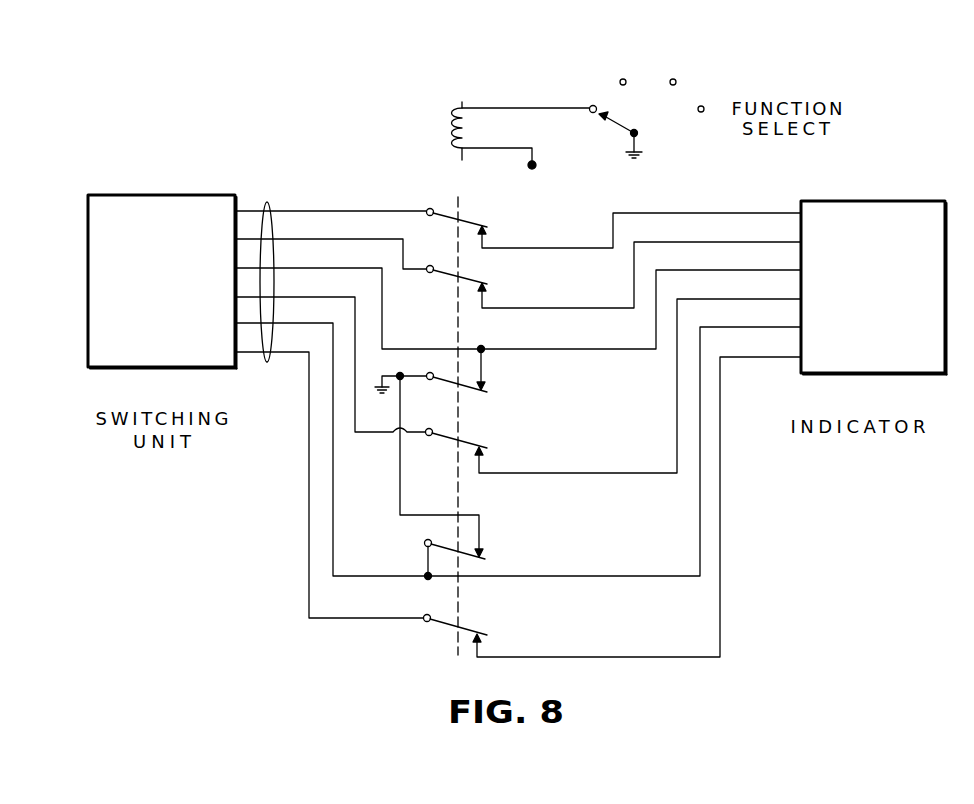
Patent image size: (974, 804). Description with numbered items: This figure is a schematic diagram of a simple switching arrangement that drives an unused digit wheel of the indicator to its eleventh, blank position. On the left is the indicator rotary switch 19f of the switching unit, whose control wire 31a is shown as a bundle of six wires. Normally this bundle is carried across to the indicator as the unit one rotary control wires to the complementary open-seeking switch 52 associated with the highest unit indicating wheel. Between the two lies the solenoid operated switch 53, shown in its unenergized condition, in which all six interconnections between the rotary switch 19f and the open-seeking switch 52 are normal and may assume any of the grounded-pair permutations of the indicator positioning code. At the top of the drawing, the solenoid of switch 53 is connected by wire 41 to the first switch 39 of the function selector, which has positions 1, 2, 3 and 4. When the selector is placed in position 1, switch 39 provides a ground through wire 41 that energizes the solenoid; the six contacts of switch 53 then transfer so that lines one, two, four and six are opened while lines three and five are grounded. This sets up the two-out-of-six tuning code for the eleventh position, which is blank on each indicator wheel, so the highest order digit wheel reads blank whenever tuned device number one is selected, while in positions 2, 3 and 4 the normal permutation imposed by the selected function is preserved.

The indicator rotary switch 19f is at (148, 195).
The control wire 31a is at (274, 201).
The open-seeking switch 52 is at (873, 201).
The solenoid operated switch 53 is at (462, 165).
The wire 41 is at (507, 108).
The first switch 39 is at (632, 121).
The position 1 is at (591, 97).
The position 2 is at (622, 70).
The position 3 is at (673, 70).
The position 4 is at (702, 98).